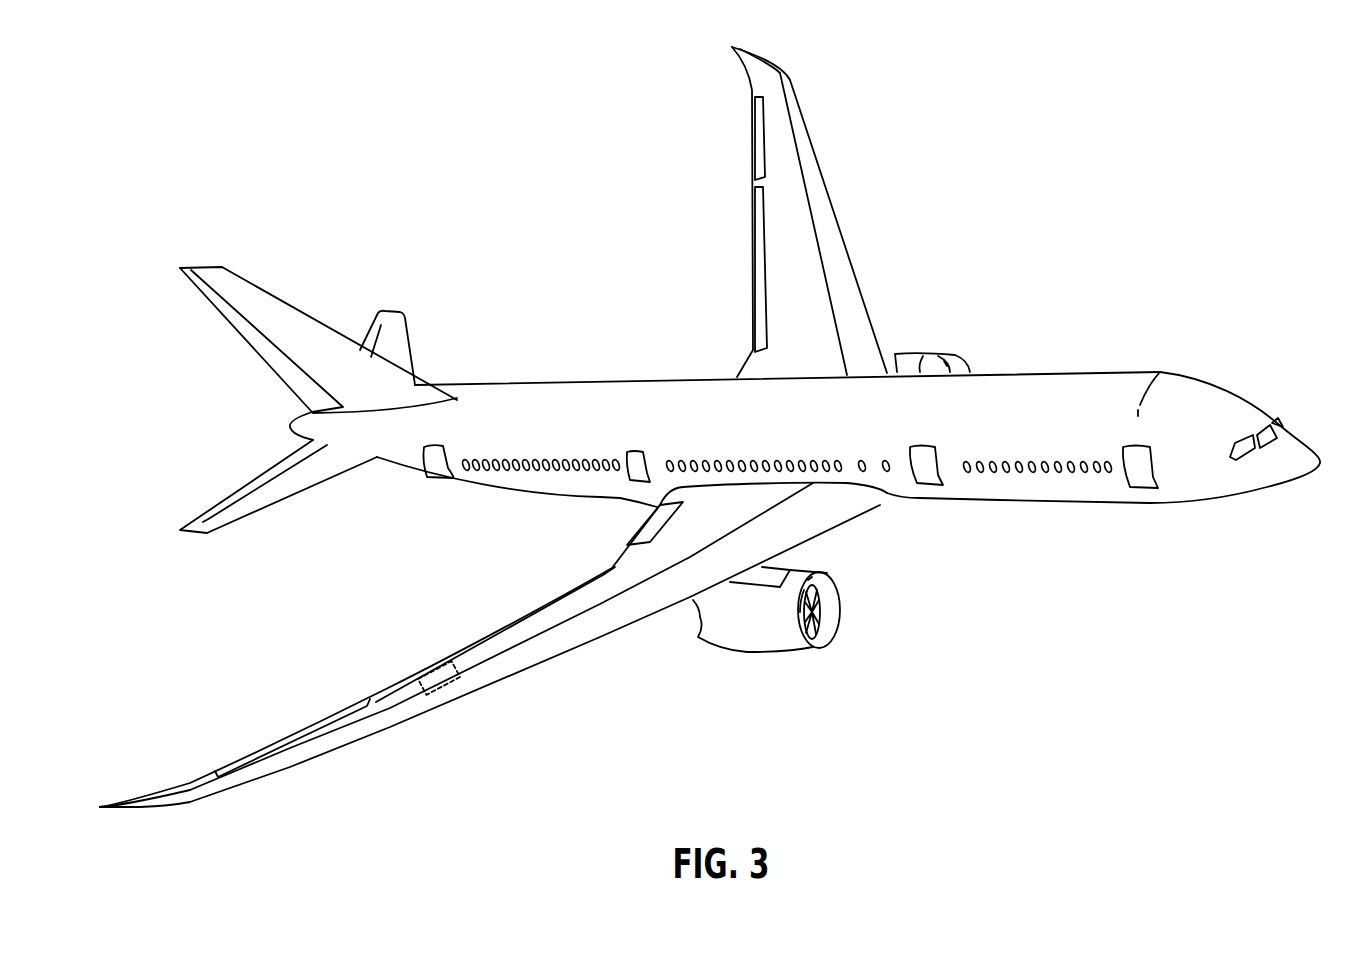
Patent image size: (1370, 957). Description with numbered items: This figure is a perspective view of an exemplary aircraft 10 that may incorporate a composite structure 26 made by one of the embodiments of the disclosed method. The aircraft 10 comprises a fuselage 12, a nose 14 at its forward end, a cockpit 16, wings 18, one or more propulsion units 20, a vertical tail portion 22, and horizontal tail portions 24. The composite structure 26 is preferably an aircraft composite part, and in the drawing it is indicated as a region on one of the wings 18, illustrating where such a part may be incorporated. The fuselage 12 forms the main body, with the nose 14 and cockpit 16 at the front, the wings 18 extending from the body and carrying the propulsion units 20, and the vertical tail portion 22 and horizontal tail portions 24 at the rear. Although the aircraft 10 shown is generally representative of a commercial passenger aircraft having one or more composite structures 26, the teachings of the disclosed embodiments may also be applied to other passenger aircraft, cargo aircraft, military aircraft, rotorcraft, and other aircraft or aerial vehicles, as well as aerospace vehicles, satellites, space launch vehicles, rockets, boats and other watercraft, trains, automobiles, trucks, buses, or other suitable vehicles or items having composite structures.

The aircraft 10 is at (1064, 169).
The fuselage 12 is at (1033, 385).
The nose 14 is at (1293, 467).
The cockpit 16 is at (1276, 422).
The wings 18 is at (800, 127).
The propulsion units 20 is at (935, 356).
The vertical tail portion 22 is at (273, 320).
The horizontal tail portions 24 is at (403, 343).
The composite structure 26 is at (438, 667).